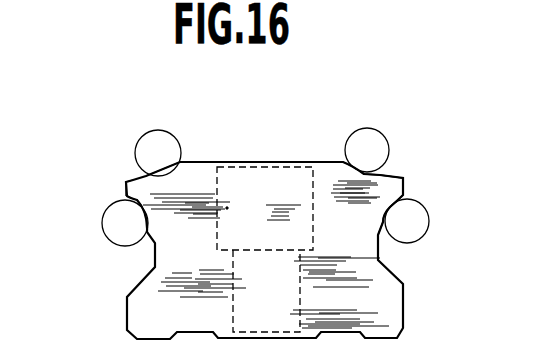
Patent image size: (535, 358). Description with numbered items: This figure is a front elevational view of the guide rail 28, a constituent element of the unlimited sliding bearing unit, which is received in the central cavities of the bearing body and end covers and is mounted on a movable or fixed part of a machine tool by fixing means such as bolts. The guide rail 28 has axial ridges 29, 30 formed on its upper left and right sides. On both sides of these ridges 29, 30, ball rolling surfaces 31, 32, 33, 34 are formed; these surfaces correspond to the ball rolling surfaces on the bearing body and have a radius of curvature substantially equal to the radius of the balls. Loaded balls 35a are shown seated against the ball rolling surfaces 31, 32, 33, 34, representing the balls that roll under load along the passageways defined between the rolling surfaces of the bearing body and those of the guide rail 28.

The guide rail 28 is at (292, 148).
The axial ridge 29 is at (140, 188).
The axial ridge 30 is at (405, 180).
The ball rolling surface 31 is at (166, 177).
The ball rolling surface 32 is at (142, 216).
The ball rolling surface 33 is at (368, 172).
The ball rolling surface 34 is at (393, 208).
The loaded ball 35a is at (171, 128).